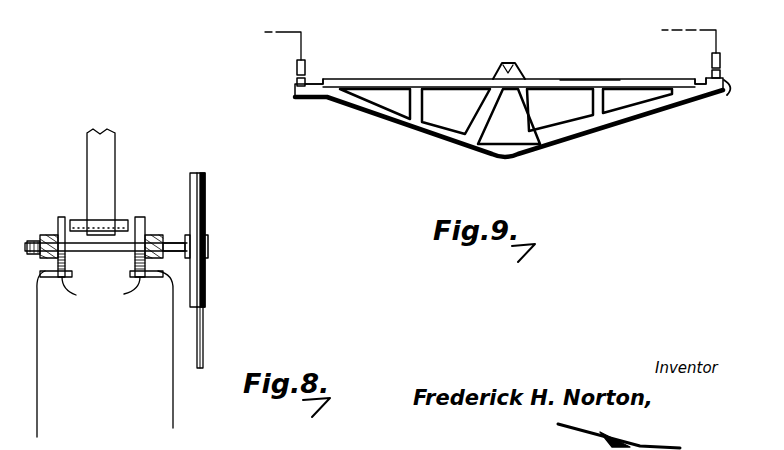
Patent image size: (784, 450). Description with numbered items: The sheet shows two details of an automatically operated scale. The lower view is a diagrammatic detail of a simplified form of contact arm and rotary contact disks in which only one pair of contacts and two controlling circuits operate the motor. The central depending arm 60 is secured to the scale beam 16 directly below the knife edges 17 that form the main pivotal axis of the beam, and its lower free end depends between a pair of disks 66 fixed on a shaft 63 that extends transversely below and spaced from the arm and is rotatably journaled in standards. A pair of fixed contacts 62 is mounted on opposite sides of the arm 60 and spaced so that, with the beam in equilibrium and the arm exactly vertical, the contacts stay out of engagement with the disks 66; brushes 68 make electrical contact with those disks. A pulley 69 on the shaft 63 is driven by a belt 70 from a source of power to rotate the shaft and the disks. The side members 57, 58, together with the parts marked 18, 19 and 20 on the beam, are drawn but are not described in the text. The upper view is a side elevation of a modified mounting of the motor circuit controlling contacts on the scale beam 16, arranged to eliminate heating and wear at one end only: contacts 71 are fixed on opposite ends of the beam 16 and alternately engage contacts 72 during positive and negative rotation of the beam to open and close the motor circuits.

In FIG. 9, the scale beam 16 is at (575, 131).
In FIG. 9, the knife edges 17 is at (517, 63).
In FIG. 9, the top flange 18 is at (590, 79).
In FIG. 9, the end portion 19 is at (312, 87).
In FIG. 9, the notch 20 is at (700, 83).
In FIG. 9, the contacts 71 is at (297, 84).
In FIG. 9, the contacts 72 is at (297, 68).
In FIG. 8, the side plate 57 is at (38, 333).
In FIG. 8, the side plate 58 is at (173, 358).
In FIG. 8, the central depending arm 60 is at (100, 152).
In FIG. 8, the fixed contacts 62 is at (120, 221).
In FIG. 8, the shaft 63 is at (172, 243).
In FIG. 8, the disks 66 is at (141, 217).
In FIG. 8, the brushes 68 is at (101, 287).
In FIG. 8, the pulley 69 is at (208, 263).
In FIG. 8, the belt 70 is at (200, 327).